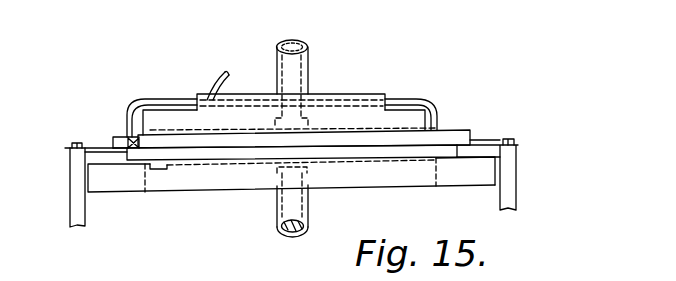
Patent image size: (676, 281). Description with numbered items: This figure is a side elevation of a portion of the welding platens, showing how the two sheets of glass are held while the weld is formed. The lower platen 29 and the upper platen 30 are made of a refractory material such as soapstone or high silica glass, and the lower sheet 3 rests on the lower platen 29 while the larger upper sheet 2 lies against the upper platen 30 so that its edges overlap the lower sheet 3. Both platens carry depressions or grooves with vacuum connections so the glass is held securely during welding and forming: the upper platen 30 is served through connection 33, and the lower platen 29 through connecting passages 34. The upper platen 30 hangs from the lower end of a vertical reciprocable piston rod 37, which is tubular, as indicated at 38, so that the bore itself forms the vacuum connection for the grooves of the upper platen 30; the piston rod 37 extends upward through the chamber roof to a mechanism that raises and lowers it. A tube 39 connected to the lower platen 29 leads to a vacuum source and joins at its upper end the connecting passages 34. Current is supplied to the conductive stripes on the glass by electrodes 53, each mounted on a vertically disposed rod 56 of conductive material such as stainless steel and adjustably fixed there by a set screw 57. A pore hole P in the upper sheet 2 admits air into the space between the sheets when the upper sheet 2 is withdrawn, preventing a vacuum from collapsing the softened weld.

The upper sheet 2 is at (446, 131).
The lower sheet 3 is at (439, 151).
The lower platen 29 is at (397, 187).
The upper platen 30 is at (395, 117).
The connection 33 is at (252, 128).
The connecting passage 34 is at (188, 170).
The piston rod 37 is at (309, 73).
The tubular bore 38 is at (299, 42).
The tube 39 is at (309, 208).
The electrode 53 is at (100, 146).
The rod 56 is at (75, 171).
The set screw 57 is at (73, 141).
The pore hole P is at (128, 137).